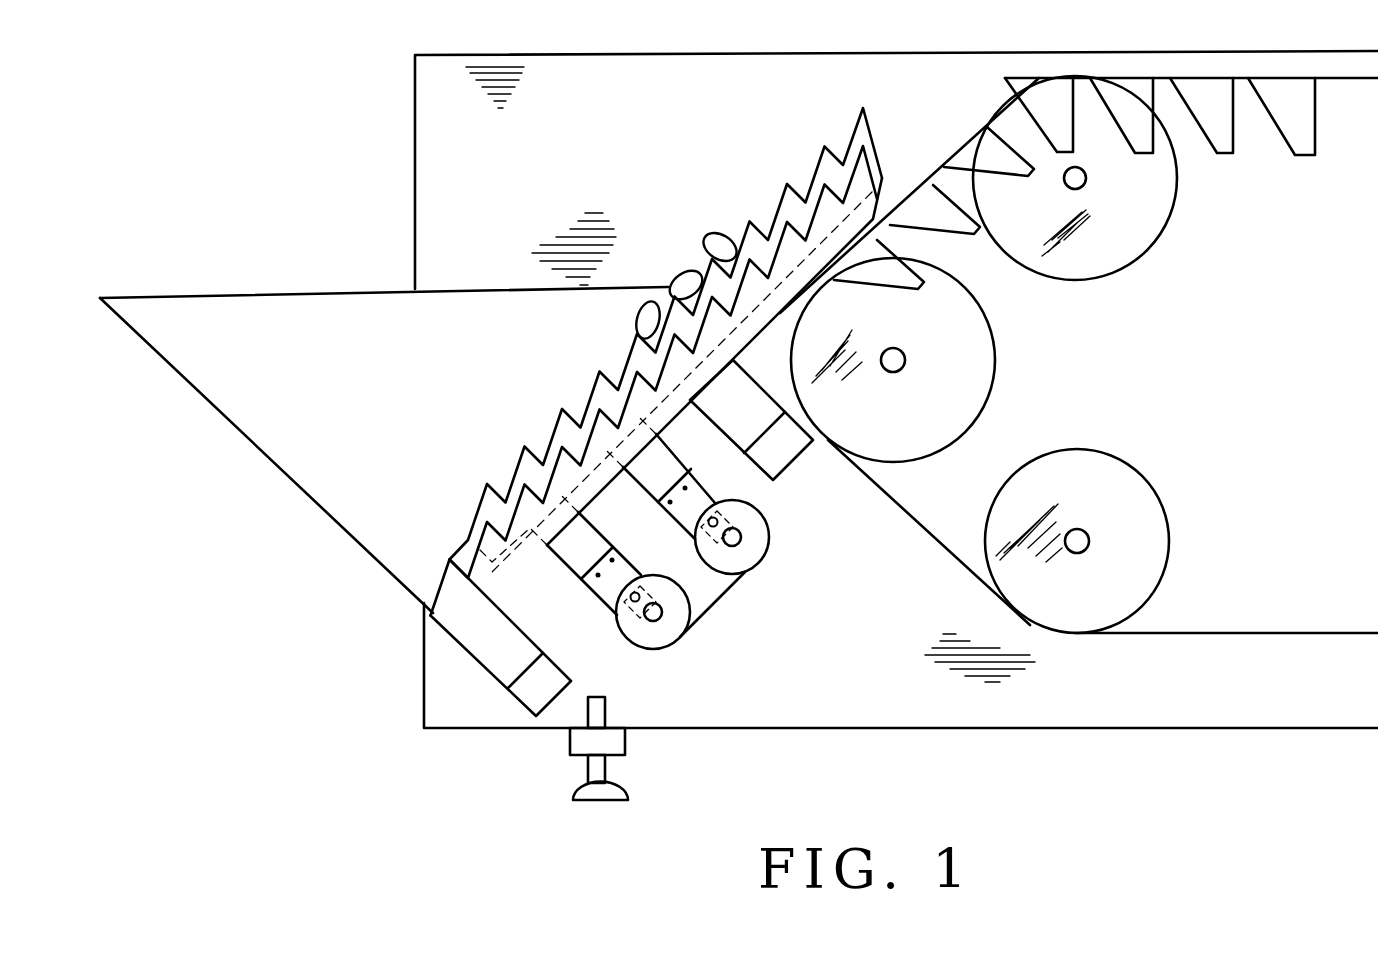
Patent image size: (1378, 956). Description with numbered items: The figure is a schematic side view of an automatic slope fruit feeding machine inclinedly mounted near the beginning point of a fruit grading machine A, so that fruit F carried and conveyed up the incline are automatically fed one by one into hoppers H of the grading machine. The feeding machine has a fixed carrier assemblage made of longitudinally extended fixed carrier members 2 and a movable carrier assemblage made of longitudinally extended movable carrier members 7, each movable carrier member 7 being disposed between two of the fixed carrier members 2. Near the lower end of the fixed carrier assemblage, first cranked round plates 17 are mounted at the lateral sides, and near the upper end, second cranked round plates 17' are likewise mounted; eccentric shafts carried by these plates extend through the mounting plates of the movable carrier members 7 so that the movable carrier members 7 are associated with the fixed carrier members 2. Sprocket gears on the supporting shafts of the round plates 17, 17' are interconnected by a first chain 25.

The fixed carrier member 2 is at (434, 566).
The movable carrier member 7 is at (501, 458).
The first cranked round plate 17 is at (701, 636).
The second cranked round plate 17' is at (805, 538).
The first chain 25 is at (697, 558).
The fruit grading machine A is at (972, 100).
The fruit F is at (712, 238).
The hopper H is at (921, 205).